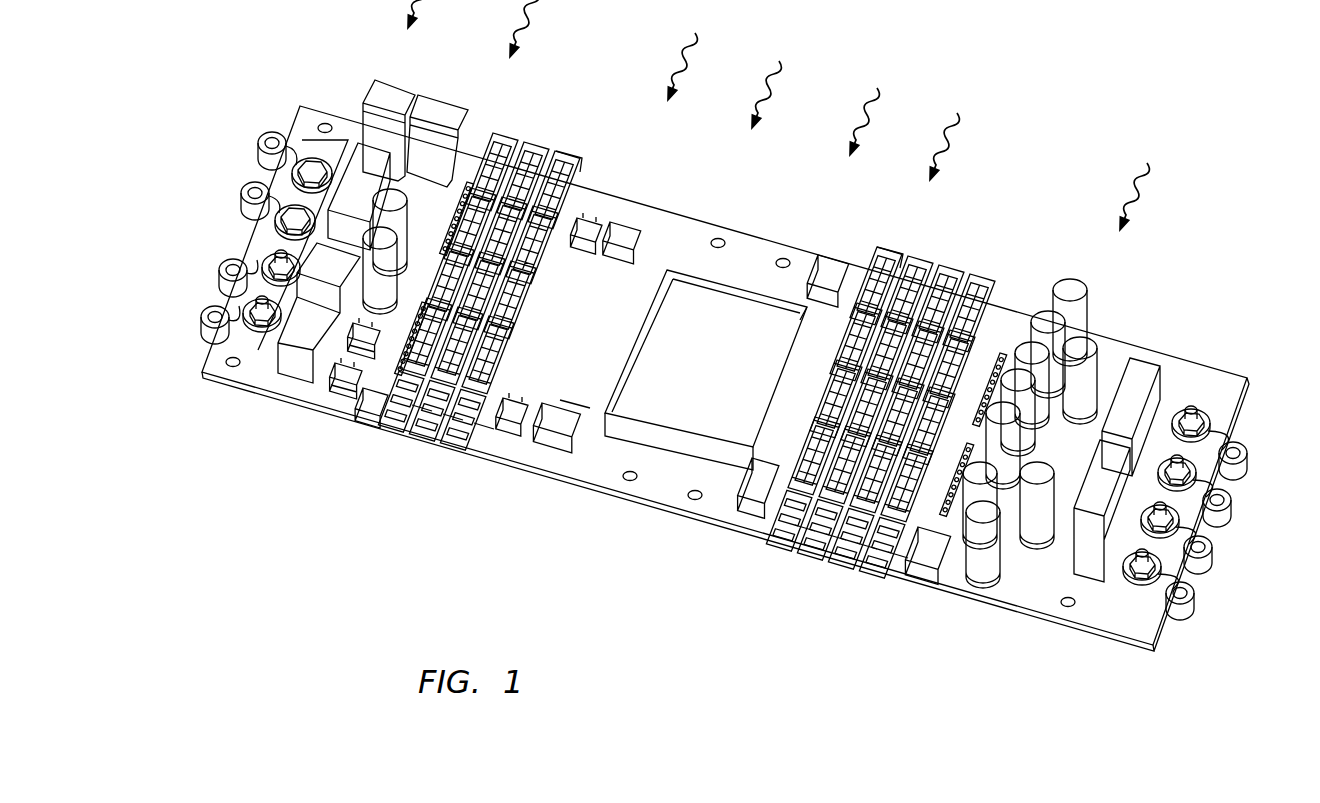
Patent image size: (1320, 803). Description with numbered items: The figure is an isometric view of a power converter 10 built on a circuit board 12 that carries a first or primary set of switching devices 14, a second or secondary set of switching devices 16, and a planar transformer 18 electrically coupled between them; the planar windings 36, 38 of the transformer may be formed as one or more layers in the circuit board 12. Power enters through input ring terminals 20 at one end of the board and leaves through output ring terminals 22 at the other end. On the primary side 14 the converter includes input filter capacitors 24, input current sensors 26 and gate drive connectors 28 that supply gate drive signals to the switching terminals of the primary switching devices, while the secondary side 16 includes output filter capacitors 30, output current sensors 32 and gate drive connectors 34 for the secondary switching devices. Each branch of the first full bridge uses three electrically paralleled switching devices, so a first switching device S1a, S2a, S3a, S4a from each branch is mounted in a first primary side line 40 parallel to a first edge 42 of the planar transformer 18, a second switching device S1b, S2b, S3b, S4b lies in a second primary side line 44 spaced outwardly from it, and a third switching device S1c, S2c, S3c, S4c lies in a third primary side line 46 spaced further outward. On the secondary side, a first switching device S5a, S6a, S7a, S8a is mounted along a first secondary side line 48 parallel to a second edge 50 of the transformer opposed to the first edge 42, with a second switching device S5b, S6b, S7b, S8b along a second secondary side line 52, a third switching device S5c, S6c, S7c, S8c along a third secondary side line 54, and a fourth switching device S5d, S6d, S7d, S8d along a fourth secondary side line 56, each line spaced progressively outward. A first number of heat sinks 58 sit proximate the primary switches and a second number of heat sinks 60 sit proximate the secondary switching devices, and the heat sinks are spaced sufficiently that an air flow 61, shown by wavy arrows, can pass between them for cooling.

The power converter 10 is at (1146, 67).
The circuit board 12 is at (1200, 362).
The first or primary set of switching devices 14 is at (605, 58).
The second or secondary set of switching devices 16 is at (995, 190).
The planar transformer 18 is at (727, 308).
The input ring terminals 20 is at (266, 136).
The output ring terminals 22 is at (1220, 432).
The input filter capacitors 24 is at (380, 285).
The input current sensors 26 is at (306, 330).
The gate drive connectors 28 is at (460, 213).
The output filter capacitors 30 is at (978, 562).
The output current sensors 32 is at (1140, 372).
The gate drive connectors 34 is at (992, 408).
The planar winding 36 is at (588, 365).
The planar winding 38 is at (775, 452).
The first primary side line 40 is at (477, 438).
The first edge 42 is at (652, 312).
The second primary side line 44 is at (443, 428).
The third primary side line 46 is at (417, 414).
The first secondary side line 48 is at (797, 534).
The second edge 50 is at (798, 347).
The second secondary side line 52 is at (830, 541).
The third secondary side line 54 is at (860, 544).
The fourth secondary side line 56 is at (892, 559).
The heat sinks 58 is at (588, 172).
The heat sinks 60 is at (880, 247).
The air flow 61 is at (788, 70).
The switching device S1a is at (565, 155).
The switching device S1b is at (556, 148).
The switching device S1c is at (523, 135).
The switching device S2a is at (476, 232).
The switching device S2b is at (508, 236).
The switching device S2c is at (540, 235).
The switching device S3a is at (455, 295).
The switching device S3b is at (487, 290).
The switching device S3c is at (519, 282).
The switching device S4a is at (487, 372).
The switching device S4b is at (452, 364).
The switching device S4c is at (420, 358).
The switching device S5a is at (886, 272).
The switching device S5b is at (924, 282).
The switching device S5c is at (952, 285).
The switching device S5d is at (980, 312).
The switching device S6a is at (870, 348).
The switching device S6b is at (893, 366).
The switching device S6c is at (960, 368).
The switching device S6d is at (983, 347).
The switching device S7a is at (847, 414).
The switching device S7b is at (848, 436).
The switching device S7c is at (920, 476).
The switching device S7d is at (940, 487).
The switching device S8a is at (811, 474).
The switching device S8b is at (840, 481).
The switching device S8c is at (870, 484).
The switching device S8d is at (897, 491).